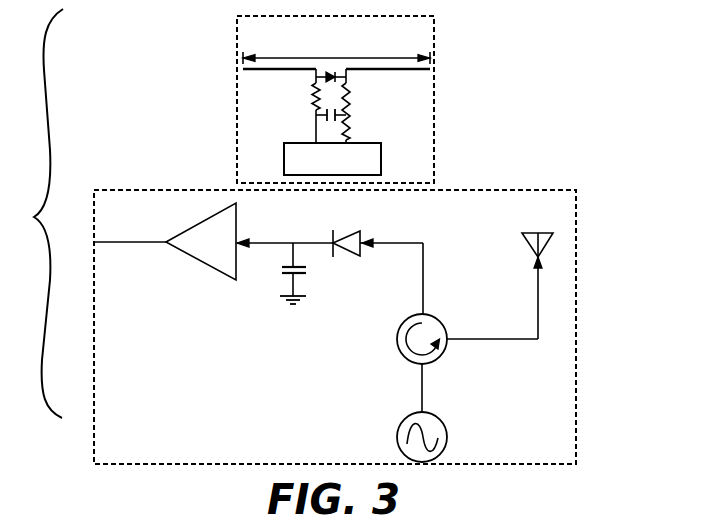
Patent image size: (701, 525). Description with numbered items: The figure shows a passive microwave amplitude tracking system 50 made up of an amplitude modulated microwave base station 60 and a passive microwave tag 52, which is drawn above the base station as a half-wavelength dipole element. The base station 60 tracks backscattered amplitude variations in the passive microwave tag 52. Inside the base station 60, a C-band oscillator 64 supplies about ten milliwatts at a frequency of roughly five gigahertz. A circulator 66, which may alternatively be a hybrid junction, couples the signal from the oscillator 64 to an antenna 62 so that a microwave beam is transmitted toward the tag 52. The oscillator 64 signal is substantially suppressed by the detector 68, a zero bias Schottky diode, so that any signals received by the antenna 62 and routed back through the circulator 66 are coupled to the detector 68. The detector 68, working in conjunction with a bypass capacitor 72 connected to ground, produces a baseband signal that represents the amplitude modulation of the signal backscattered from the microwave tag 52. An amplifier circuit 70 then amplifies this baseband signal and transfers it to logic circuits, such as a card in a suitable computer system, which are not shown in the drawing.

The passive microwave amplitude tracking system 50 is at (36, 213).
The passive microwave tag 52 is at (465, 92).
The microwave base station 60 is at (539, 184).
The antenna 62 is at (533, 238).
The C-band oscillator 64 is at (445, 422).
The circulator 66 is at (440, 322).
The detector 68 is at (350, 223).
The amplifier circuit 70 is at (237, 222).
The bypass capacitor 72 is at (271, 291).